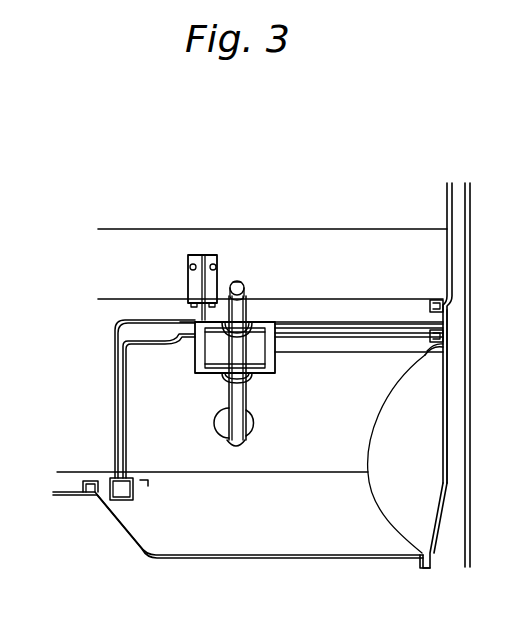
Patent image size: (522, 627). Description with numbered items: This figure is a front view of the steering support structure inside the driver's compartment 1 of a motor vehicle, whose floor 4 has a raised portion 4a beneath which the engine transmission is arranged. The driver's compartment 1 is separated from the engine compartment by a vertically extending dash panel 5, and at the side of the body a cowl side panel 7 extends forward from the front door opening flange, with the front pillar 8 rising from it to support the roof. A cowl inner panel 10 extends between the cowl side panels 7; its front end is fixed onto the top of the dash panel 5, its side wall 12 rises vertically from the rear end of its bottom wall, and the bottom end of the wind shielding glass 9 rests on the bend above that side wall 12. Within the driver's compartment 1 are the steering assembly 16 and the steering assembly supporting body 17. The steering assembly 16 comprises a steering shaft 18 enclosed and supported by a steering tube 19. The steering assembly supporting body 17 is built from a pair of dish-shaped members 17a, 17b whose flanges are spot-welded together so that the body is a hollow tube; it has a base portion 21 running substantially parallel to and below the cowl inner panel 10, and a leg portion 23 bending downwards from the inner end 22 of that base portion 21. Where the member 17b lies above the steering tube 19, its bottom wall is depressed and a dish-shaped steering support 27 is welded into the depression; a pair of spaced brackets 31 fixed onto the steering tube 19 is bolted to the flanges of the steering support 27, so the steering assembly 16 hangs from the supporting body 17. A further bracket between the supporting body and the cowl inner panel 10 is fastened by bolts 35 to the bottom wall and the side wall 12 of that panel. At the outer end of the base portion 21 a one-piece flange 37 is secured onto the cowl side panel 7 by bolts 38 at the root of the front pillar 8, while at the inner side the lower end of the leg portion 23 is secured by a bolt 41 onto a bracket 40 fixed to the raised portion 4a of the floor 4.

The driver's compartment 1 is at (80, 400).
The floor 4 is at (195, 545).
The raised portion 4a is at (138, 540).
The dash panel 5 is at (104, 373).
The cowl side panel 7 is at (448, 415).
The front pillar 8 is at (447, 212).
The wind shielding glass 9 is at (353, 205).
The cowl inner panel 10 is at (277, 257).
The side wall 12 is at (228, 247).
The steering assembly 16 is at (247, 398).
The steering assembly supporting body 17 is at (318, 319).
The member 17a is at (380, 322).
The member 17b is at (368, 354).
The steering shaft 18 is at (238, 280).
The steering tube 19 is at (234, 421).
The base portion 21 is at (355, 322).
The inner end 22 is at (122, 312).
The leg portion 23 is at (115, 420).
The steering support 27 is at (200, 352).
The brackets 31 is at (257, 323).
The bolts 35 is at (193, 264).
The flange 37 is at (427, 357).
The bolts 38 is at (440, 316).
The bracket 40 is at (100, 478).
The bolt 41 is at (133, 490).